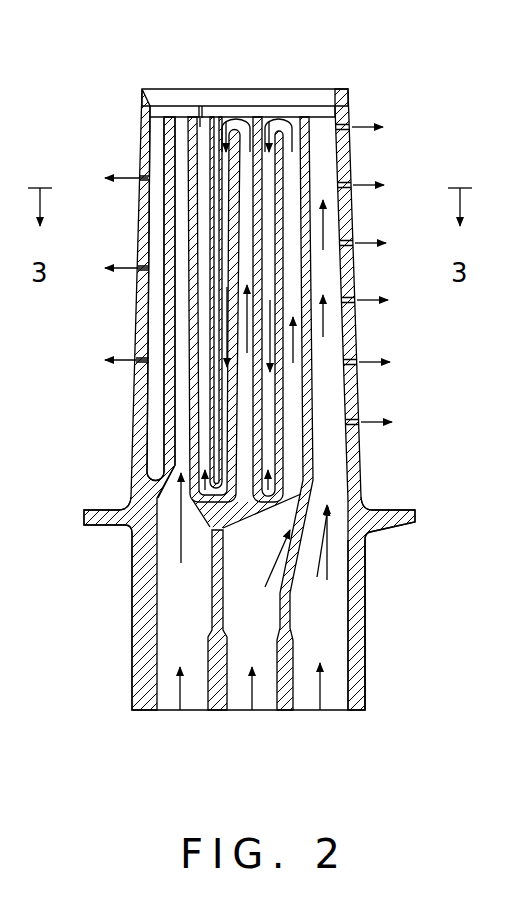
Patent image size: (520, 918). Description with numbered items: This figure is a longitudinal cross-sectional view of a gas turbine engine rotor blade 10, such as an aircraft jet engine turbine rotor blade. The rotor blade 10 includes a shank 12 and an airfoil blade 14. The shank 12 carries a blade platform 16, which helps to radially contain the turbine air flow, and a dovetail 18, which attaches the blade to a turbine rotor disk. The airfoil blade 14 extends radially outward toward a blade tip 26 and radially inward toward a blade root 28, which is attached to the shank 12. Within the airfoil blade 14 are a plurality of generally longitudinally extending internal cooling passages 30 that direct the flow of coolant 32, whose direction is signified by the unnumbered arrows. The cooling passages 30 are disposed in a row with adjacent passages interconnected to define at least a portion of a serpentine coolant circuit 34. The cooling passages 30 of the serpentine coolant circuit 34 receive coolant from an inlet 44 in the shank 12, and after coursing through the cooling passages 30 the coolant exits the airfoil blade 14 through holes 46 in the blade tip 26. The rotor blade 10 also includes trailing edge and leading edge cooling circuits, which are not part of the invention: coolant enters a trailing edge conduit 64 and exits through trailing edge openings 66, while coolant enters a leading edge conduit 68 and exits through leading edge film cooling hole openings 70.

The rotor blade 10 is at (397, 126).
The shank 12 is at (369, 572).
The airfoil blade 14 is at (357, 396).
The blade platform 16 is at (407, 510).
The dovetail 18 is at (356, 660).
The blade tip 26 is at (318, 104).
The blade root 28 is at (226, 524).
The internal cooling passages 30 is at (297, 180).
The coolant 32 is at (183, 712).
The serpentine coolant circuit 34 is at (230, 381).
The inlet 44 is at (263, 645).
The holes 46 is at (200, 104).
The trailing edge conduit 64 is at (318, 463).
The trailing edge openings 66 is at (357, 425).
The leading edge conduit 68 is at (183, 464).
The leading edge film cooling hole openings 70 is at (150, 268).